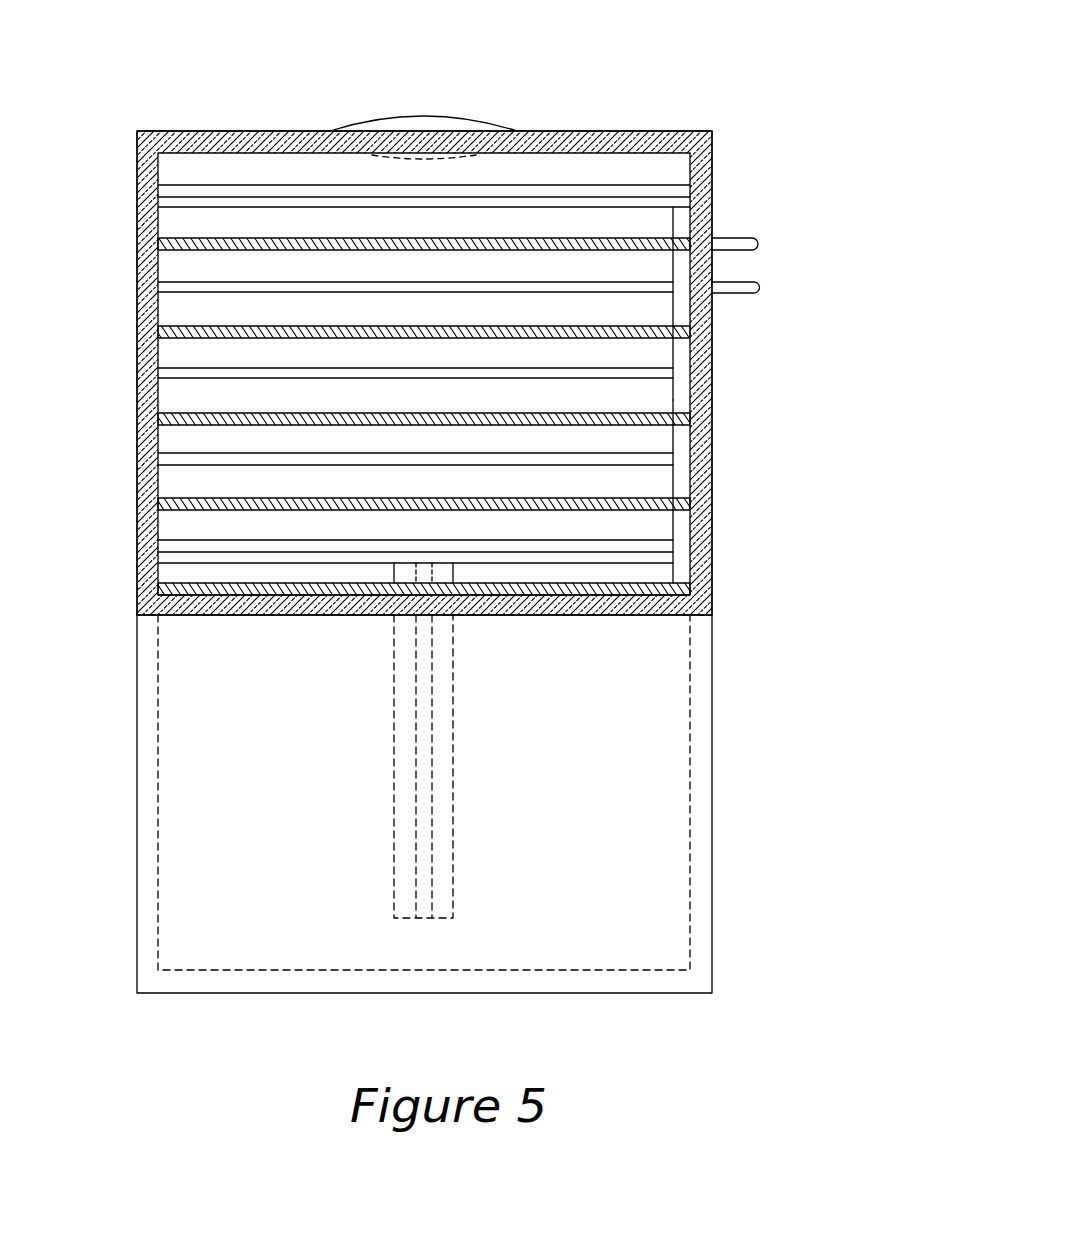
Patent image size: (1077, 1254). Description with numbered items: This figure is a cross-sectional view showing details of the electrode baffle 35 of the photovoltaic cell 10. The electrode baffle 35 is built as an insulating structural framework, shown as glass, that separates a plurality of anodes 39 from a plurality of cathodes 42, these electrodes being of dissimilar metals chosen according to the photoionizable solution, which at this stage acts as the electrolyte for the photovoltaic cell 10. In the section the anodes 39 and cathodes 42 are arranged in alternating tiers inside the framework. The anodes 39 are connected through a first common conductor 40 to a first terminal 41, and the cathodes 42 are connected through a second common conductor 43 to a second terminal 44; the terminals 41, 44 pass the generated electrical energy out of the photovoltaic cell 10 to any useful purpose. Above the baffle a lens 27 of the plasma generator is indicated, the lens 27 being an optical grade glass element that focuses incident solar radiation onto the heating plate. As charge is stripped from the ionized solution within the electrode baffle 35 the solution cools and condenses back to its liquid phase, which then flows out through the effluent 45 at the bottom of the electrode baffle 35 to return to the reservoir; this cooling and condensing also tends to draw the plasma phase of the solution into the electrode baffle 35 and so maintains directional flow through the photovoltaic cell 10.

The photovoltaic cell 10 is at (632, 76).
The lens 27 is at (428, 118).
The electrode baffle 35 is at (202, 225).
The anodes 39 is at (405, 200).
The first common conductor 40 is at (682, 215).
The first terminal 41 is at (748, 246).
The cathodes 42 is at (592, 245).
The second common conductor 43 is at (680, 472).
The second terminal 44 is at (735, 290).
The effluent 45 is at (302, 568).